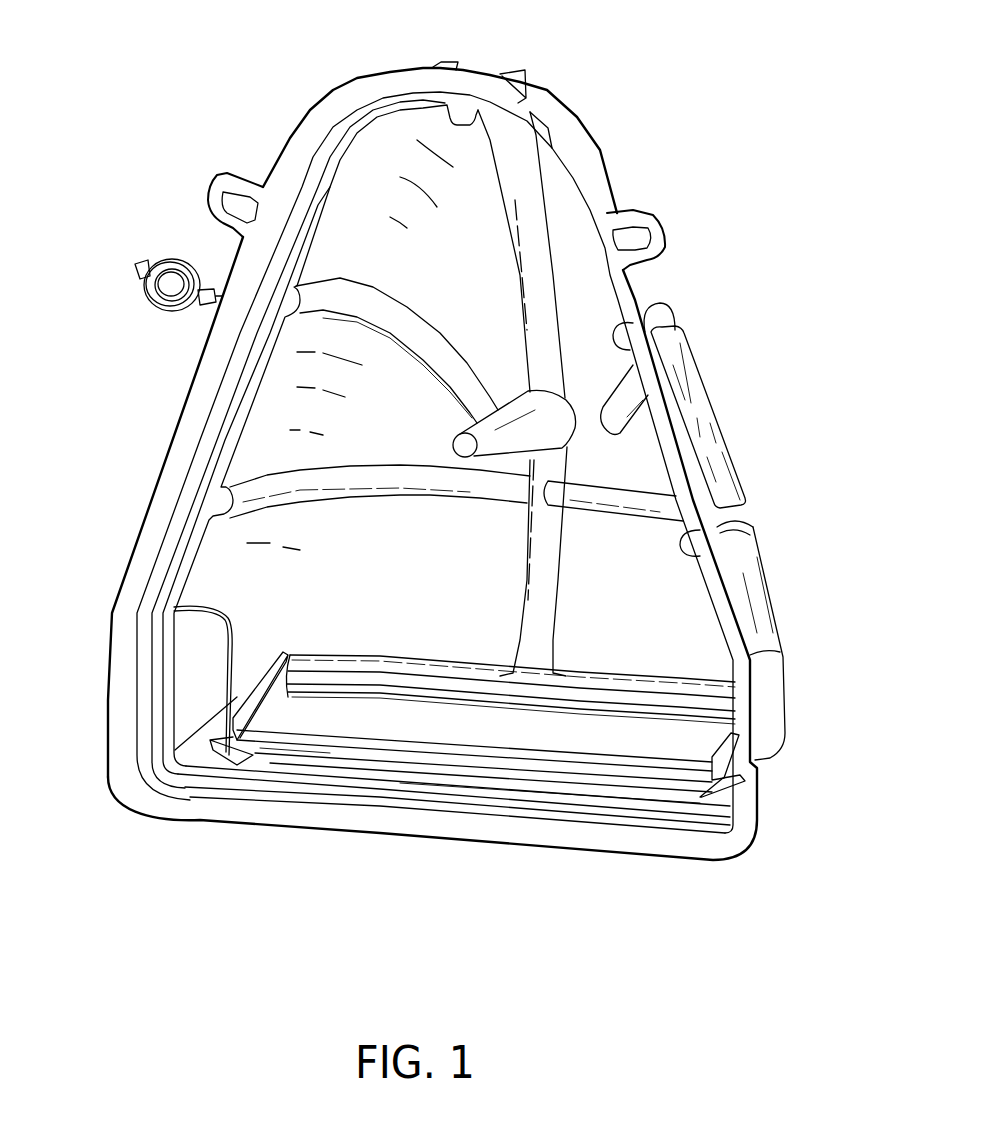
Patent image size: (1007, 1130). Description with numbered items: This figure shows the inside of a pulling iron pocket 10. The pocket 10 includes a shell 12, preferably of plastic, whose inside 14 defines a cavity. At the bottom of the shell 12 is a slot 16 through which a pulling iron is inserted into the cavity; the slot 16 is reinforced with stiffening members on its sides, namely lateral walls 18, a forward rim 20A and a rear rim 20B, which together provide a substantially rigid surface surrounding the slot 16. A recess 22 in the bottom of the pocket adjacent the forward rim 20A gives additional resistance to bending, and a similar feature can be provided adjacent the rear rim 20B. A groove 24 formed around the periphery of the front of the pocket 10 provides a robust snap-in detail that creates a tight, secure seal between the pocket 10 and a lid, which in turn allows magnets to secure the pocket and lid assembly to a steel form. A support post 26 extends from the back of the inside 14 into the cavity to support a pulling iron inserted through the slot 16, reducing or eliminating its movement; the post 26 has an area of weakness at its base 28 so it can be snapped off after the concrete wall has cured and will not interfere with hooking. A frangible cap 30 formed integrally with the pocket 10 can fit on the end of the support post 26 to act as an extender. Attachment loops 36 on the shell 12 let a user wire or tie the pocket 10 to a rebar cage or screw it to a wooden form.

The pulling iron pocket 10 is at (647, 91).
The shell 12 is at (704, 410).
The inside 14 is at (411, 586).
The slot 16 is at (505, 727).
The lateral walls 18 is at (247, 700).
The forward rim 20A is at (407, 747).
The rear rim 20B is at (382, 697).
The recess 22 is at (615, 787).
The groove 24 is at (160, 583).
The support post 26 is at (520, 410).
The base 28 is at (574, 428).
The frangible cap 30 is at (160, 303).
The attachment loops 36 is at (230, 174).